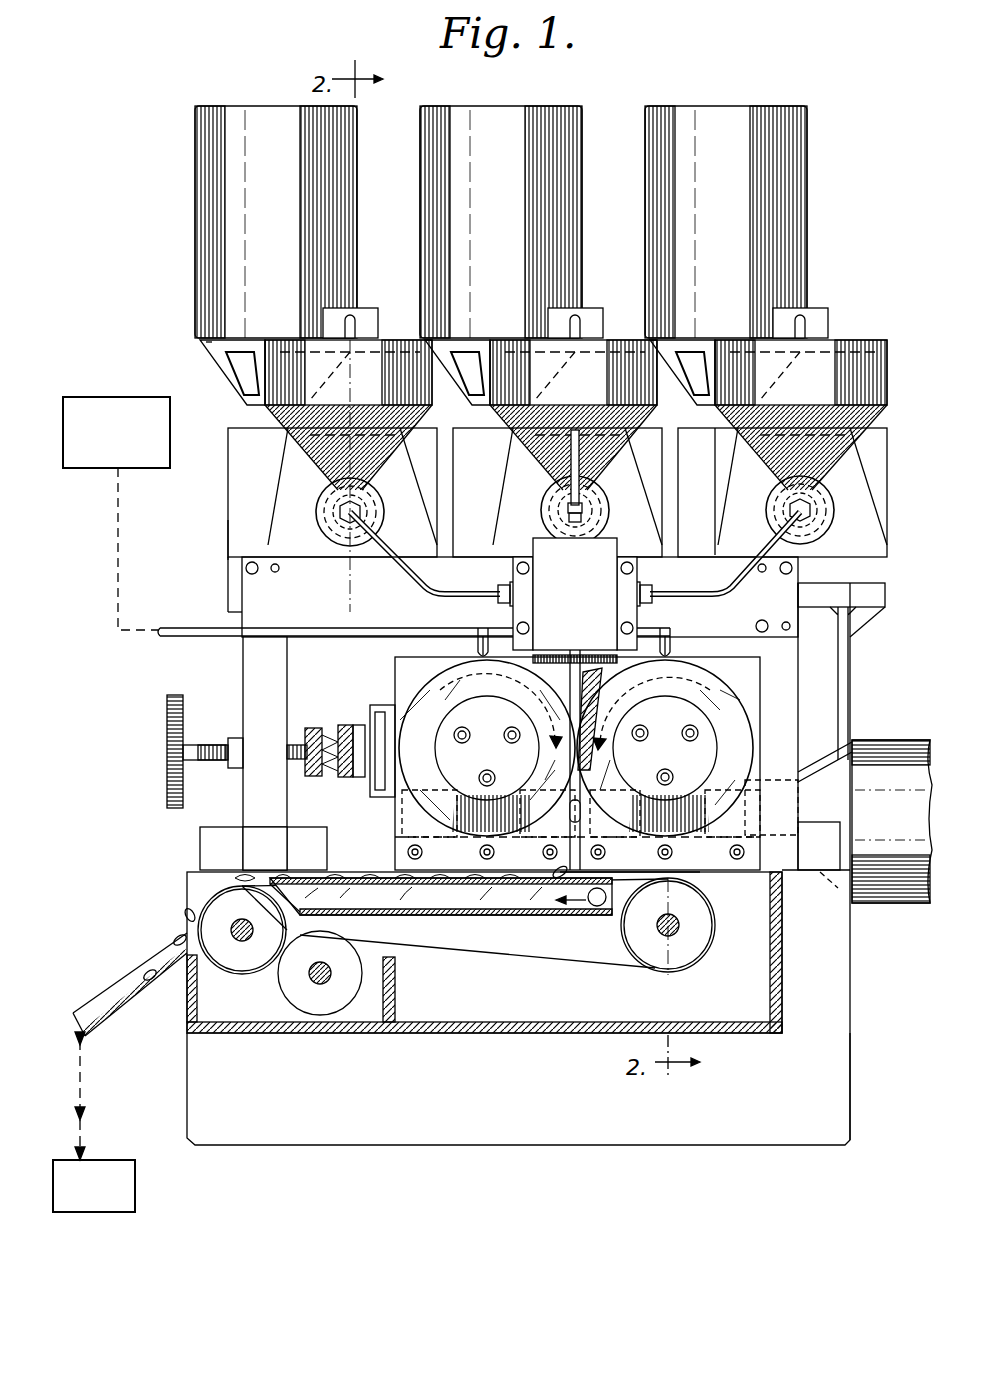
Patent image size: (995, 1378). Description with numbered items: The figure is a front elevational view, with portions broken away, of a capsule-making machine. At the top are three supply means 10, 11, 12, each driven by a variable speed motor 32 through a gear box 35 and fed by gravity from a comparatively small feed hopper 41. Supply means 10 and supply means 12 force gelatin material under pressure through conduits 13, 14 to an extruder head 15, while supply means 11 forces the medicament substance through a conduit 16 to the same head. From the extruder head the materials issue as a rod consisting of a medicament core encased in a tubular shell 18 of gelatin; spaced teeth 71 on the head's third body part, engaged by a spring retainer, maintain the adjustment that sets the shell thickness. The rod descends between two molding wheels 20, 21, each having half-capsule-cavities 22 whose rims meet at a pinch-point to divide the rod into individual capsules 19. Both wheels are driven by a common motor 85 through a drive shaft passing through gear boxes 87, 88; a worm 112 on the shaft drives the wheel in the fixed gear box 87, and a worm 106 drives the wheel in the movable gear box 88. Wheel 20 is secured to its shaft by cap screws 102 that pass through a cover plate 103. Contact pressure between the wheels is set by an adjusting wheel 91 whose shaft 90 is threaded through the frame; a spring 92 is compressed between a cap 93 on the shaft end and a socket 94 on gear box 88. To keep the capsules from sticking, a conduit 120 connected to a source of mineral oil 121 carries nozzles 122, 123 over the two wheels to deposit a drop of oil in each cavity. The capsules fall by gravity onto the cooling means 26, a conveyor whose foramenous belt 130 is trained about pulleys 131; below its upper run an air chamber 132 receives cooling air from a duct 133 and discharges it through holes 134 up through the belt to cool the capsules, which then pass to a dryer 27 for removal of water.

The variable speed motor 32 is at (276, 219).
The feed hopper 41 is at (356, 390).
The supply means 10 is at (270, 472).
The supply means 11 is at (528, 480).
The supply means 12 is at (852, 483).
The gear box 35 is at (228, 530).
The conduit 16 is at (585, 470).
The conduit 13 is at (396, 566).
The conduit 14 is at (740, 586).
The extruder head 15 is at (590, 598).
The conduit 120 is at (312, 626).
The source of mineral oil 121 is at (118, 397).
The nozzle 122 is at (480, 626).
The nozzle 123 is at (672, 642).
The spaced teeth 71 is at (598, 655).
The gear box 88 is at (398, 688).
The molding wheel 20 is at (420, 682).
The tubular shell 18 is at (567, 672).
The cap screws 102 is at (504, 734).
The cover plate 103 is at (512, 758).
The molding wheel 21 is at (715, 692).
The gear box 87 is at (752, 692).
The half-capsule-cavities 22 is at (600, 678).
The worm 106 is at (472, 845).
The worm 112 is at (675, 828).
The cooling means 26 is at (596, 870).
The adjusting wheel 91 is at (167, 728).
The shaft 90 is at (208, 744).
The cap 93 is at (312, 728).
The spring 92 is at (338, 777).
The socket 94 is at (362, 777).
The air chamber 132 is at (428, 918).
The pulleys 131 is at (288, 975).
The foramenous belt 130 is at (715, 942).
The discharge holes 134 is at (477, 915).
The duct 133 is at (595, 907).
The capsules 19 is at (182, 940).
The dryer 27 is at (117, 1212).
The motor 85 is at (888, 903).